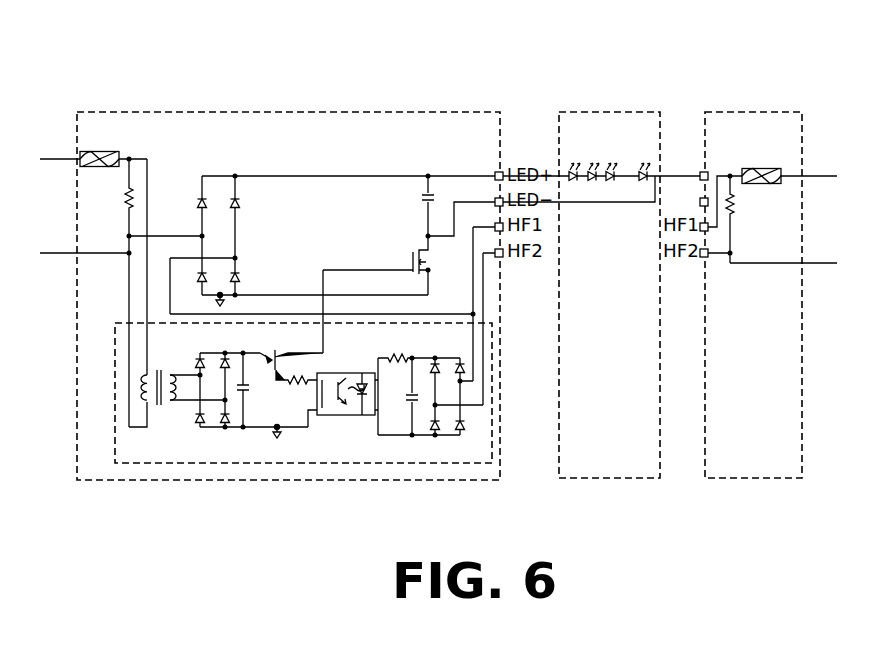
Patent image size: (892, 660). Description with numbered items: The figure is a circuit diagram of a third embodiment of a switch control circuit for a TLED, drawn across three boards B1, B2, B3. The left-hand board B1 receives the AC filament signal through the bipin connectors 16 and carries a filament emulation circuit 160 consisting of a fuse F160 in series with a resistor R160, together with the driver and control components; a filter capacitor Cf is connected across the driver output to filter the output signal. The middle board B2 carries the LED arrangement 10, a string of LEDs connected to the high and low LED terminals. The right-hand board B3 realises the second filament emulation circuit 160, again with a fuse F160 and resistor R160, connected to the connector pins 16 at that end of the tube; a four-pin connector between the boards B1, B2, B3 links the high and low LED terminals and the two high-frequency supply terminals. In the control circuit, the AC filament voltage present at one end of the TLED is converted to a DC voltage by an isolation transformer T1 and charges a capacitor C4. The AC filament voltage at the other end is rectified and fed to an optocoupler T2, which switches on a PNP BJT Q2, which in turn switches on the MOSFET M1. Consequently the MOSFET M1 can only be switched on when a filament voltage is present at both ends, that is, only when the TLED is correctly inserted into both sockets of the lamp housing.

The bipin connectors 16 is at (833, 325).
The filament emulation circuit 160 is at (740, 132).
The LED arrangement 10 is at (604, 146).
The fuse F160 is at (770, 78).
The resistor R160 is at (734, 214).
The filter capacitor Cf is at (436, 195).
The MOSFET M1 is at (432, 258).
The isolation transformer T1 is at (158, 373).
The optocoupler T2 is at (347, 417).
The PNP BJT Q2 is at (273, 356).
The capacitor C4 is at (248, 383).
The board B1 is at (100, 480).
The board B2 is at (627, 478).
The board B3 is at (742, 478).